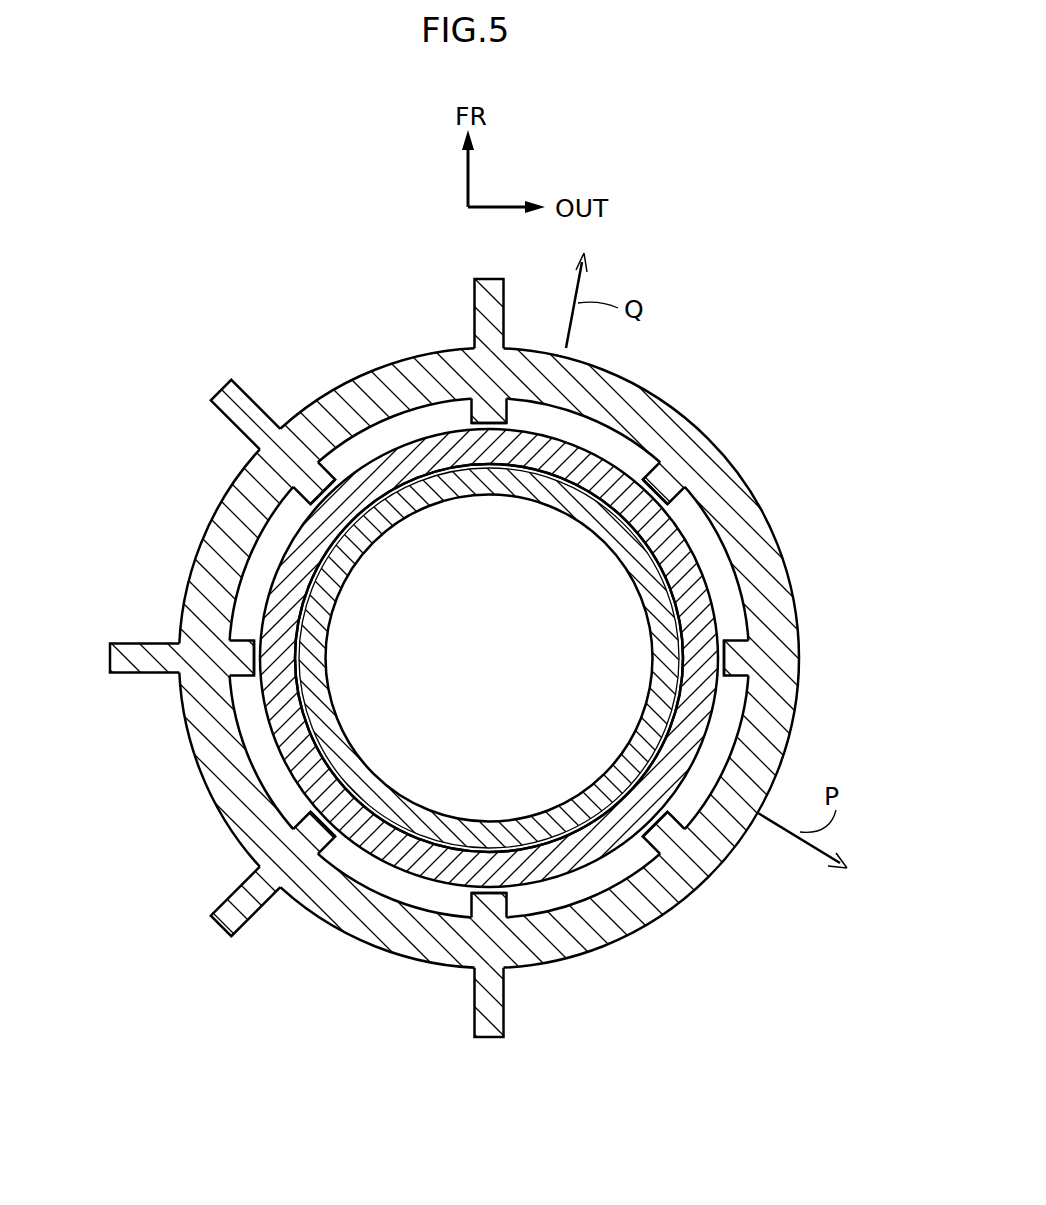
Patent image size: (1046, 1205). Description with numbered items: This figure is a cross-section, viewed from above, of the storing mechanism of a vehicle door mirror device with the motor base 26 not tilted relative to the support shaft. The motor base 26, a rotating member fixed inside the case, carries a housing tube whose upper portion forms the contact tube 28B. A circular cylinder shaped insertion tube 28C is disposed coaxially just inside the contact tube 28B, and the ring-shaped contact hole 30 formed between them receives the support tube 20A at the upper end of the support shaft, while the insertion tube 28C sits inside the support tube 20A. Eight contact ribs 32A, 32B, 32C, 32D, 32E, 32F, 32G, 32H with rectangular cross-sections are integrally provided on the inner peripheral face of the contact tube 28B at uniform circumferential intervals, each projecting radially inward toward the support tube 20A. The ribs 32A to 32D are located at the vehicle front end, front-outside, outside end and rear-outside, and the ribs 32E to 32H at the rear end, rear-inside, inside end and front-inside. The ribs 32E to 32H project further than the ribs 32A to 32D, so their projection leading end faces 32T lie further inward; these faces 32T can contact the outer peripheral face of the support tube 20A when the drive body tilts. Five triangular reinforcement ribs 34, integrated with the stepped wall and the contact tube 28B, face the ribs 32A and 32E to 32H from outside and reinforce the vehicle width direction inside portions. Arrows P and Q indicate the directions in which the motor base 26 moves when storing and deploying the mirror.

The support tube 20A is at (700, 555).
The motor base 26 is at (473, 657).
The contact tube 28B is at (228, 490).
The insertion tube 28C is at (332, 585).
The contact hole 30 is at (735, 715).
The contact rib 32A is at (462, 410).
The contact rib 32B is at (655, 455).
The contact rib 32C is at (728, 652).
The contact rib 32D is at (650, 848).
The contact rib 32E is at (506, 898).
The contact rib 32F is at (300, 810).
The contact rib 32G is at (243, 637).
The contact rib 32H is at (330, 455).
The projection leading end face 32T is at (352, 518).
The reinforcement rib 34 is at (478, 295).